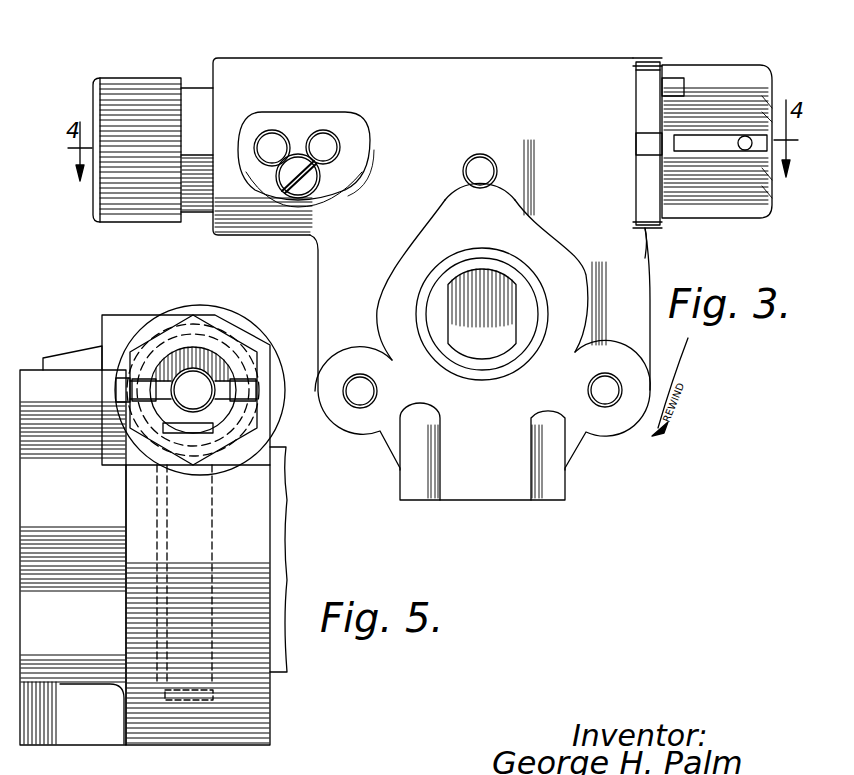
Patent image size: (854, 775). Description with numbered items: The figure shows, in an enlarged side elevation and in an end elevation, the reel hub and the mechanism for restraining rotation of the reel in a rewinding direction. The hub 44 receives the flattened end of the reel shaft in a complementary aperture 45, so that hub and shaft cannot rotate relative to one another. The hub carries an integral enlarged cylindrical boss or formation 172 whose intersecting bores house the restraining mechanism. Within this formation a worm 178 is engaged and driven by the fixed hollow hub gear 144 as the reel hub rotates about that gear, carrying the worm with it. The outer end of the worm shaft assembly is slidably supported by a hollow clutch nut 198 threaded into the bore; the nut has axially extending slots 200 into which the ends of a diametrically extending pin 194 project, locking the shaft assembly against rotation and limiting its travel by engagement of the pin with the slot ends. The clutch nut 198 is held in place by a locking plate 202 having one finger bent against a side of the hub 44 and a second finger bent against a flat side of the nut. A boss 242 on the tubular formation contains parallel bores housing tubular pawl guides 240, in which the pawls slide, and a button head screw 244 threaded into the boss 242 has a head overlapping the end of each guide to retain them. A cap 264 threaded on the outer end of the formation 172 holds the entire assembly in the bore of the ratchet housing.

In FIG. 3, the hub 44 is at (320, 298).
In FIG. 3, the complementary aperture 45 is at (510, 305).
In FIG. 5, the hub gear 144 is at (220, 587).
In FIG. 3, the cylindrical boss or formation 172 is at (248, 50).
In FIG. 5, the worm 178 is at (212, 342).
In FIG. 3, the pin 194 is at (746, 150).
In FIG. 5, the pin 194 is at (248, 390).
In FIG. 3, the clutch nut 198 is at (715, 218).
In FIG. 5, the clutch nut 198 is at (242, 438).
In FIG. 3, the slots 200 is at (700, 140).
In FIG. 3, the locking plate 202 is at (683, 44).
In FIG. 5, the locking plate 202 is at (152, 330).
In FIG. 3, the pawl guides 240 is at (275, 143).
In FIG. 3, the boss 242 is at (292, 120).
In FIG. 5, the boss 242 is at (62, 358).
In FIG. 3, the button head screw 244 is at (310, 188).
In FIG. 3, the cap 264 is at (136, 82).